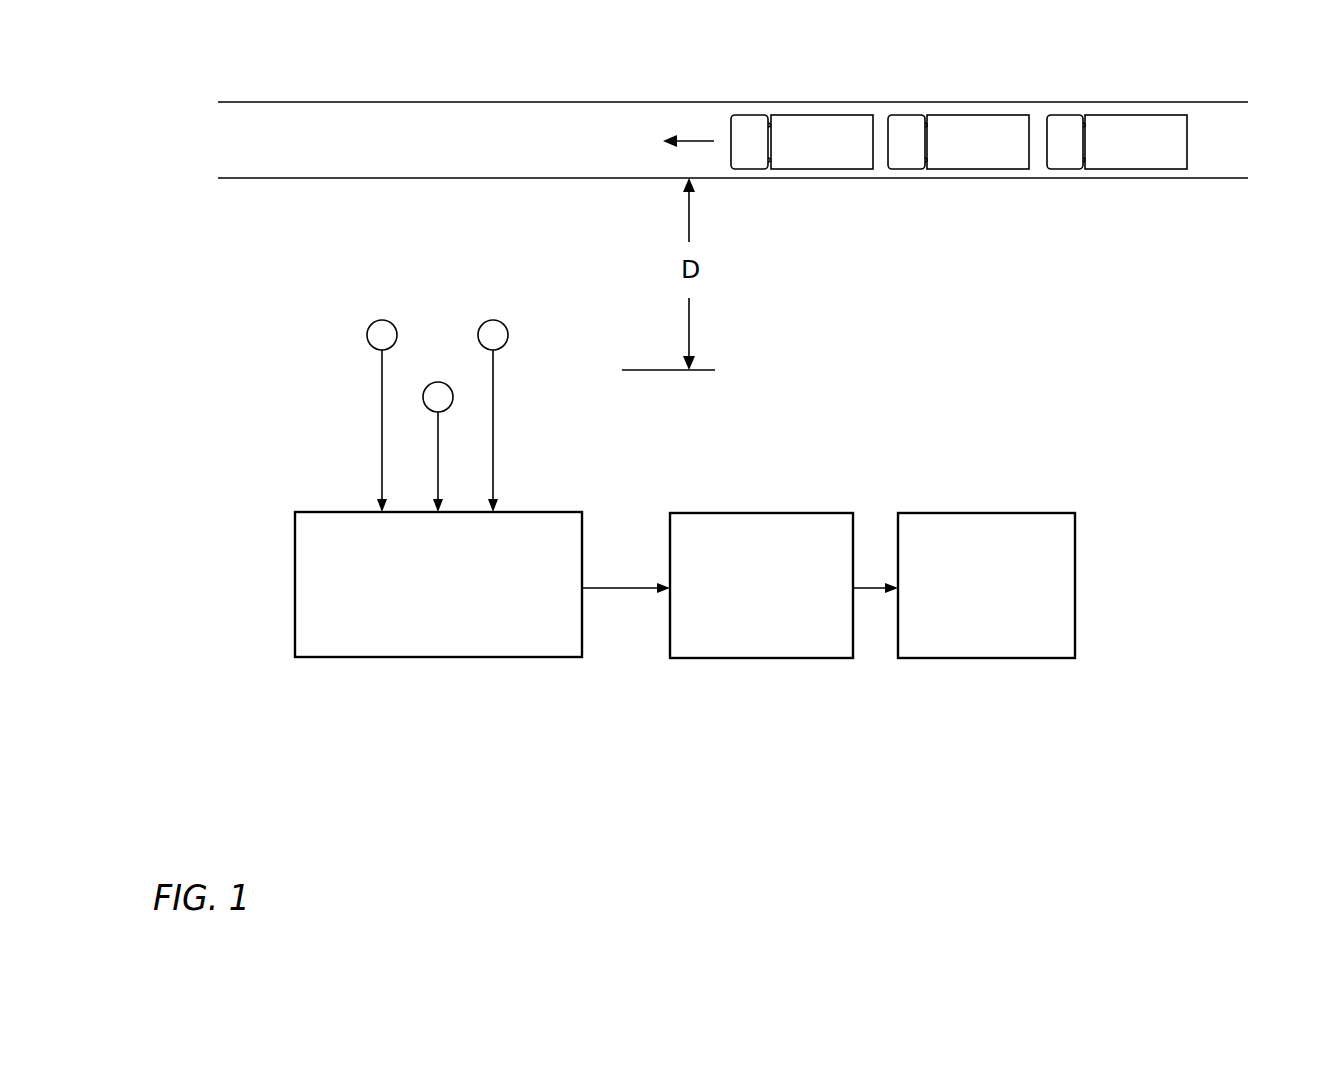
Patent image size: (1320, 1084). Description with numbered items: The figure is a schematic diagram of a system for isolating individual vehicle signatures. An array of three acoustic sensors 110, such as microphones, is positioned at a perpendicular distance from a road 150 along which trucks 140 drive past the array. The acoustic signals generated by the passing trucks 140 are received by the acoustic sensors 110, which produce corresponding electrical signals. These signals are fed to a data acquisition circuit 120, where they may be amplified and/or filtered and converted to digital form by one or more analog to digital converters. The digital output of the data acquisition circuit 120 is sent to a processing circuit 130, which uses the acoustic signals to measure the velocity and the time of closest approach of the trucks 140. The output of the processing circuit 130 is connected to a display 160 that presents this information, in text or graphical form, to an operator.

The acoustic sensors 110 is at (367, 335).
The data acquisition circuit 120 is at (427, 657).
The processing circuit 130 is at (753, 658).
The trucks 140 is at (833, 169).
The road 150 is at (297, 178).
The display 160 is at (990, 658).